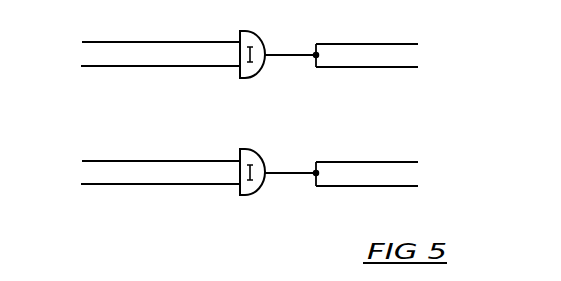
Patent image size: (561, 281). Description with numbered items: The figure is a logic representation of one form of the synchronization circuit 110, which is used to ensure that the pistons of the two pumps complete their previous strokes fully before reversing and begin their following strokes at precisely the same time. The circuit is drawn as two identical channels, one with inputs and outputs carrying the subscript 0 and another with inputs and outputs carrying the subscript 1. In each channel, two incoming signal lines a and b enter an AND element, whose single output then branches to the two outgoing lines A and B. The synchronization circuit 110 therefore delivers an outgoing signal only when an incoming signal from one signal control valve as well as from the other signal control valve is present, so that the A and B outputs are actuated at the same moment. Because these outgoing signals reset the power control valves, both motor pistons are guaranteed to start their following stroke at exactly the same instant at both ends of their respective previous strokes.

The synchronization circuit 110 is at (254, 114).
The channel 0 AND gate (inputs a0, b0; outputs A0, B0) 0 is at (254, 54).
The channel 1 AND gate (inputs a1, b1; outputs A1, B1) 1 is at (251, 173).